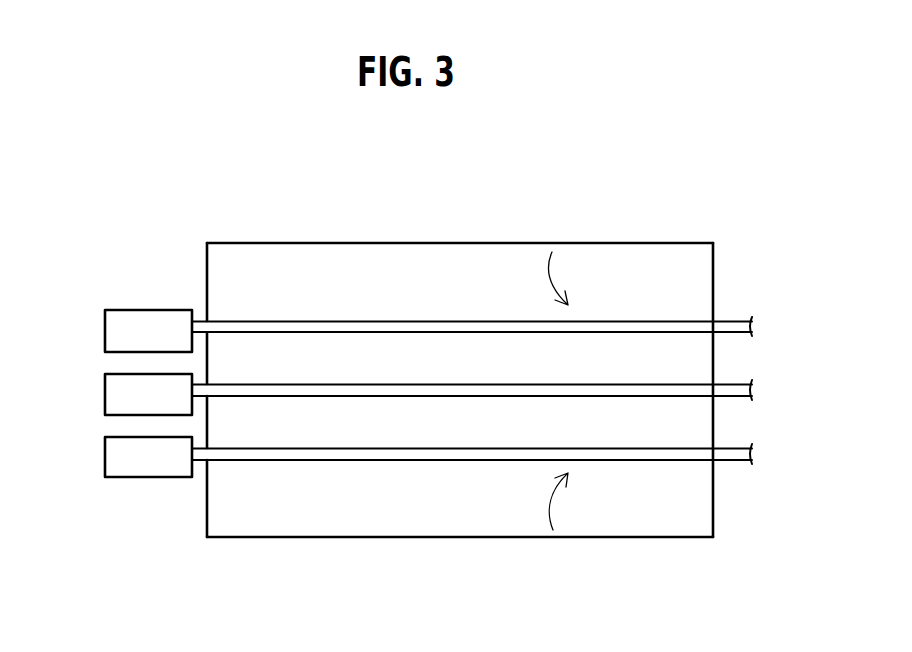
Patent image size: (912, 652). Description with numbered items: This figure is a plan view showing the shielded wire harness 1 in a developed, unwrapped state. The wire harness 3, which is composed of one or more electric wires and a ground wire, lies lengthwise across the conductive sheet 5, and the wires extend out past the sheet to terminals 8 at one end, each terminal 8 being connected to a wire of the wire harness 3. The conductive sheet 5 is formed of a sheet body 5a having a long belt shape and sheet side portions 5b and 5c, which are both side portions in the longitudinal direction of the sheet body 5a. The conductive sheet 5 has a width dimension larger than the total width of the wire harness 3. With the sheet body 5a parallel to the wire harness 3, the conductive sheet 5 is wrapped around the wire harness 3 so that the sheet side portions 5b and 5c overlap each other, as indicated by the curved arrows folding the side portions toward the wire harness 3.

The shielded wire harness 1 is at (447, 200).
The wire harness 3 is at (738, 390).
The conductive sheet 5 is at (575, 243).
The sheet body 5a is at (705, 420).
The sheet side portion 5b is at (656, 252).
The sheet side portion 5c is at (660, 527).
The terminal 8 is at (110, 334).